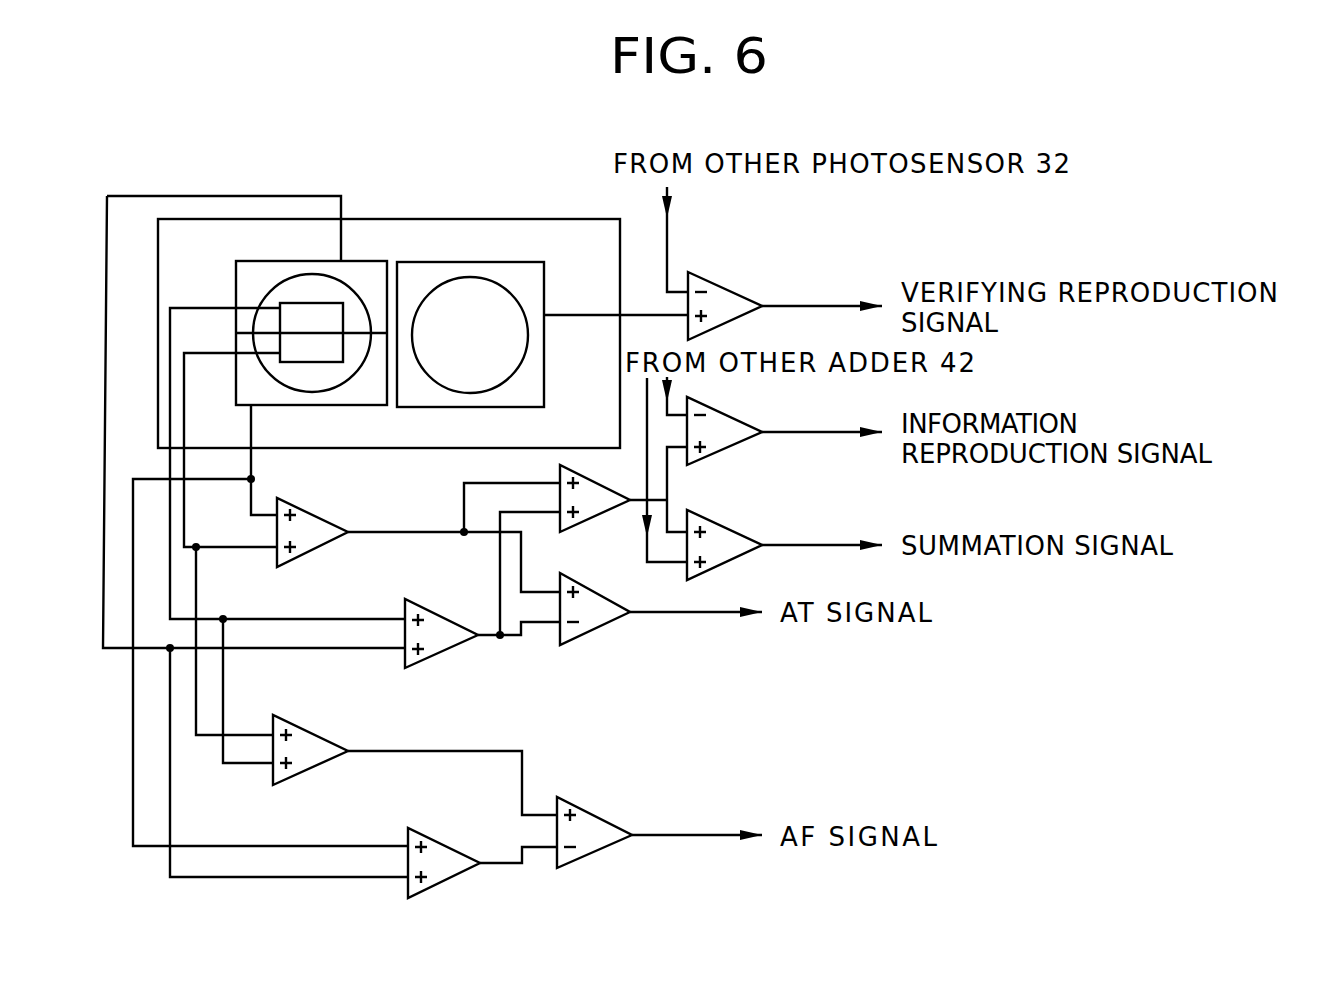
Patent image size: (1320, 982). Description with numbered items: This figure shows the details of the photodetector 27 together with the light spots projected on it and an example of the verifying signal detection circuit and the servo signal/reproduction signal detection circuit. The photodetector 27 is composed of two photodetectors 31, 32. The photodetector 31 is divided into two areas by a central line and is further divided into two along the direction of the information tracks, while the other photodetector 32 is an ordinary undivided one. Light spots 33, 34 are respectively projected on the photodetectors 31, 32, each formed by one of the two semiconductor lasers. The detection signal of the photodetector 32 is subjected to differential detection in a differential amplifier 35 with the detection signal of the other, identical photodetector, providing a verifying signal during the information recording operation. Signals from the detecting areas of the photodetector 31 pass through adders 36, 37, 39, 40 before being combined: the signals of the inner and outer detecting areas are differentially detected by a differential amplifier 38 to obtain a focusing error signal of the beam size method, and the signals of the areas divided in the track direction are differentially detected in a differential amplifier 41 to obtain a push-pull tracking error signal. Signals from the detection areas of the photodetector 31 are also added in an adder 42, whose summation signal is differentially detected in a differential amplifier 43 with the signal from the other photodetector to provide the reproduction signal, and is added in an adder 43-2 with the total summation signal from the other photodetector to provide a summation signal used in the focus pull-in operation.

The photodetector 27 is at (460, 220).
The photodetector 31 is at (247, 260).
The photodetector 32 is at (457, 262).
The light spot 33 is at (263, 298).
The light spot 34 is at (507, 288).
The differential amplifier 35 is at (712, 280).
The adder 36 is at (325, 740).
The adder 37 is at (454, 850).
The differential amplifier 38 is at (602, 819).
The adder 39 is at (318, 517).
The adder 40 is at (445, 618).
The differential amplifier 41 is at (590, 566).
The adder 42 is at (615, 492).
The differential amplifier 43 is at (716, 410).
The adder 43-2 is at (712, 522).